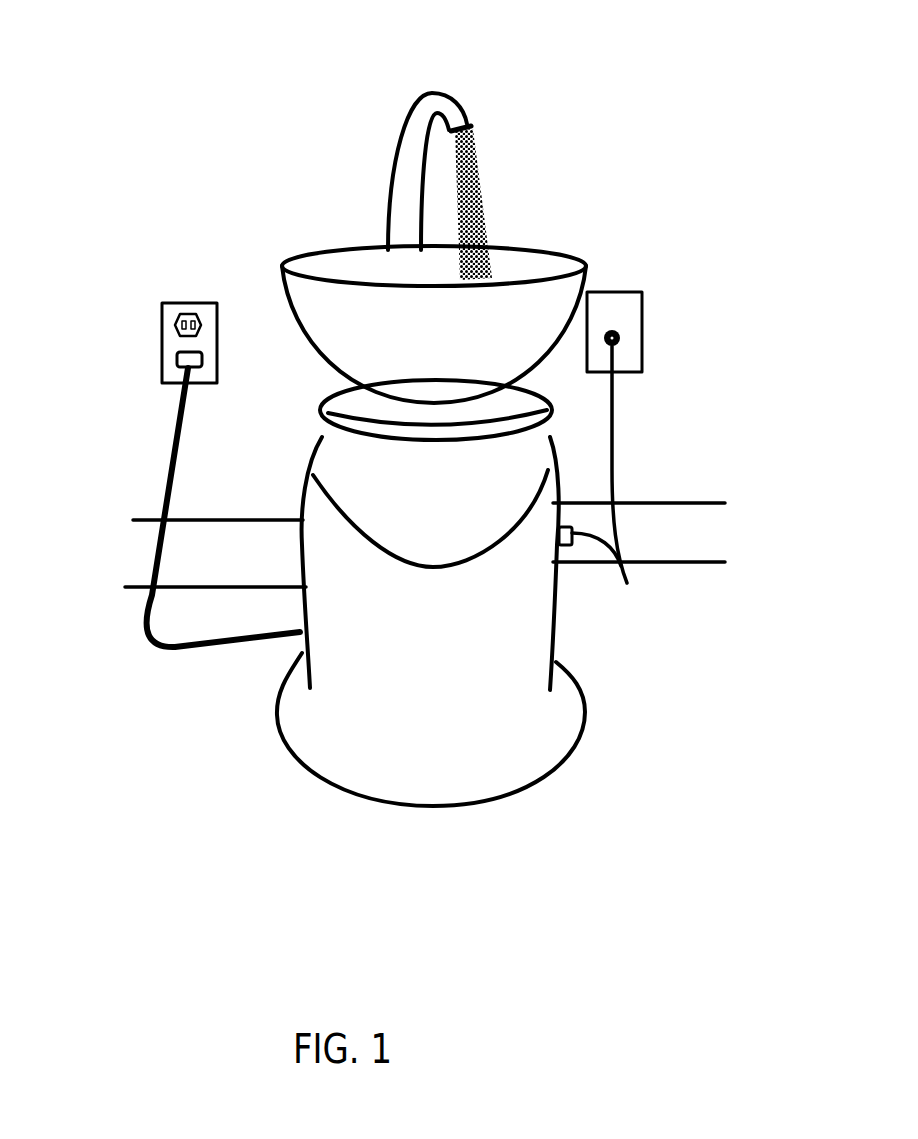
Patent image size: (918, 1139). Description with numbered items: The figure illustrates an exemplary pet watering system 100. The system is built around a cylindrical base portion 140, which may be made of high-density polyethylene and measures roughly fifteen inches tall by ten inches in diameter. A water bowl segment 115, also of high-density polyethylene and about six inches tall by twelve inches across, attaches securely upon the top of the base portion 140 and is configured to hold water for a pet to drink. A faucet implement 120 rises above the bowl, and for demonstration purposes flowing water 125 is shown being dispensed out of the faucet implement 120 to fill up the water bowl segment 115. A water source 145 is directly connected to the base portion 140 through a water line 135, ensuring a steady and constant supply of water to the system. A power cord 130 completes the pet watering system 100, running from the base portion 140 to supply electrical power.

The pet watering system 100 is at (284, 126).
The water bowl segment 115 is at (302, 307).
The faucet implement 120 is at (460, 103).
The flowing water 125 is at (478, 162).
The power cord 130 is at (162, 496).
The water line 135 is at (613, 452).
The base portion 140 is at (302, 715).
The water source 145 is at (612, 333).